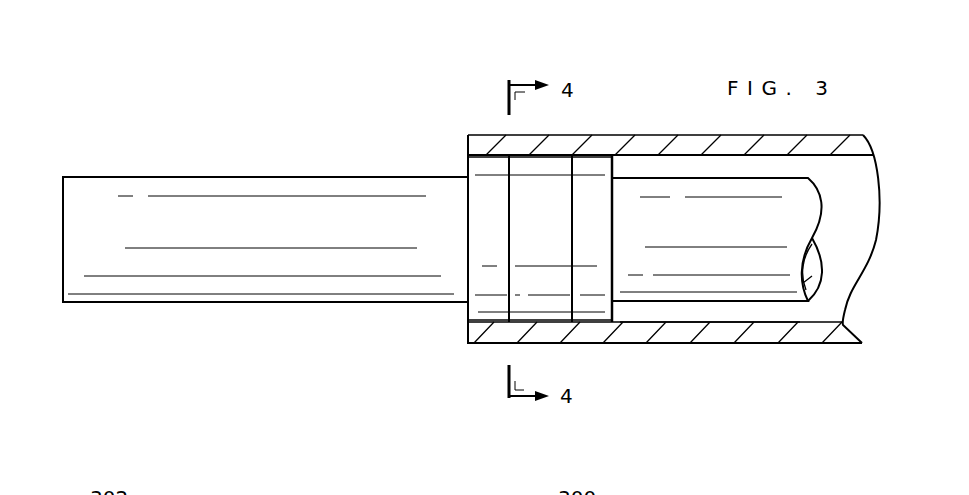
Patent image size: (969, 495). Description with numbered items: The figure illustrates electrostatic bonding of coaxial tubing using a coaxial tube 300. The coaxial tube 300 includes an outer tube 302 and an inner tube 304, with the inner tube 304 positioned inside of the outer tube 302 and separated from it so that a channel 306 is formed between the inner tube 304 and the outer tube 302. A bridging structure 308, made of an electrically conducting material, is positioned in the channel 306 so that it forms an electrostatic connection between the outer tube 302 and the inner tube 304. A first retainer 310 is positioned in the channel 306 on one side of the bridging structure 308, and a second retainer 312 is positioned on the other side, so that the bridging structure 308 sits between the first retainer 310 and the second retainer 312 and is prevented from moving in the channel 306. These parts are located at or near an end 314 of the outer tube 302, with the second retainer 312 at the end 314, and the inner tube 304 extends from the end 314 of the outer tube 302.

The coaxial tube 300 is at (331, 74).
The outer tube 302 is at (817, 345).
The inner tube 304 is at (273, 178).
The channel 306 is at (653, 309).
The bridging structure 308 is at (557, 254).
The first retainer 310 is at (606, 227).
The second retainer 312 is at (476, 165).
The end 314 is at (468, 330).